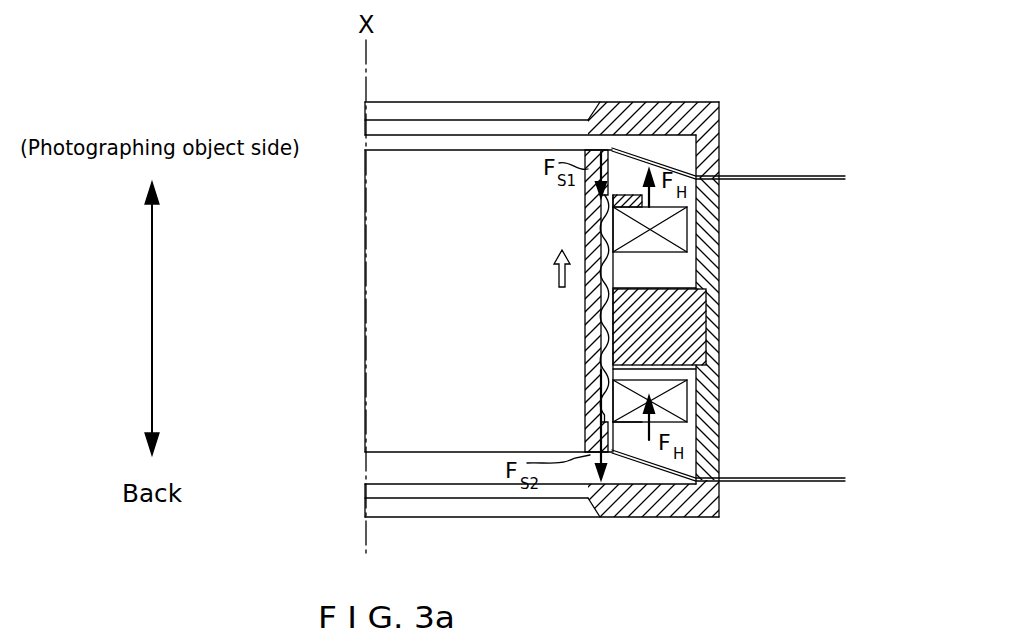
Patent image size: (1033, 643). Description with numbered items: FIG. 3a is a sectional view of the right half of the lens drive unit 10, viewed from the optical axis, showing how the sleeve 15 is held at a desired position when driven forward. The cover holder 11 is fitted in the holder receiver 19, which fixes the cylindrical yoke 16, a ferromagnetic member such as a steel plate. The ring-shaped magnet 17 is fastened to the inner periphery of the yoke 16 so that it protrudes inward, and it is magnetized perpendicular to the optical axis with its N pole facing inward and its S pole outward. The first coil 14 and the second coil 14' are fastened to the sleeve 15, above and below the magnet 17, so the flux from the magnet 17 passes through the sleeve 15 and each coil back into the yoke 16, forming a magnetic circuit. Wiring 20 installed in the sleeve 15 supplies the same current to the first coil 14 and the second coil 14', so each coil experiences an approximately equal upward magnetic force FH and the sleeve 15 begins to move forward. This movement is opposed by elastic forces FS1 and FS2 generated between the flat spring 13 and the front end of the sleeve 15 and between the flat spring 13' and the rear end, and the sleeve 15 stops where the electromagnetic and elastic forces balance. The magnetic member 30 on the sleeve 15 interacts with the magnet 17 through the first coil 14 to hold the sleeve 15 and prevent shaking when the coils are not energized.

The lens drive unit 10 is at (726, 74).
The cover holder 11 is at (705, 132).
The flat spring 13 is at (721, 114).
The flat spring 13' is at (728, 531).
The first coil 14 is at (707, 229).
The second coil 14' is at (710, 405).
The sleeve 15 is at (596, 400).
The yoke 16 is at (712, 388).
The magnet 17 is at (678, 345).
The holder receiver 19 is at (673, 503).
The wiring 20 is at (601, 328).
The magnetic member 30 is at (625, 196).